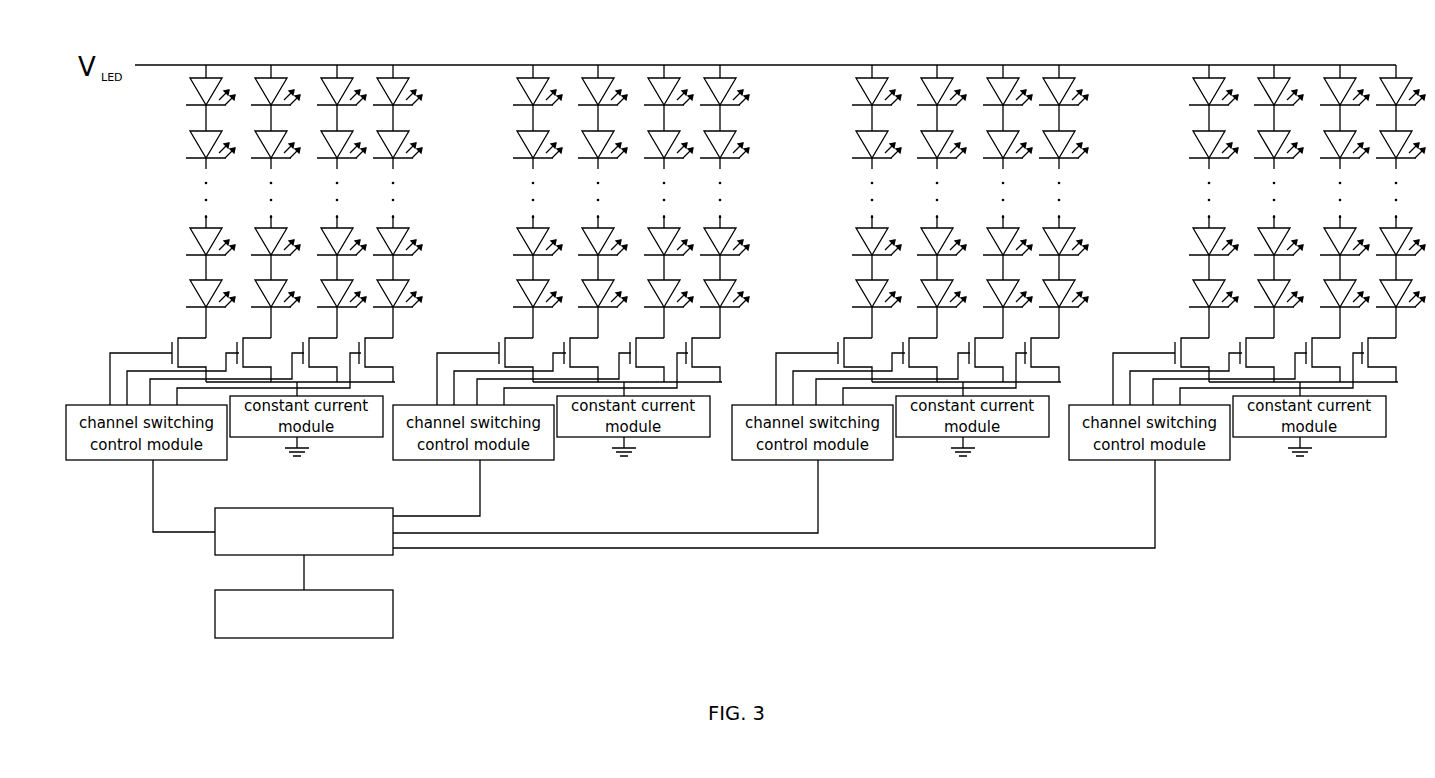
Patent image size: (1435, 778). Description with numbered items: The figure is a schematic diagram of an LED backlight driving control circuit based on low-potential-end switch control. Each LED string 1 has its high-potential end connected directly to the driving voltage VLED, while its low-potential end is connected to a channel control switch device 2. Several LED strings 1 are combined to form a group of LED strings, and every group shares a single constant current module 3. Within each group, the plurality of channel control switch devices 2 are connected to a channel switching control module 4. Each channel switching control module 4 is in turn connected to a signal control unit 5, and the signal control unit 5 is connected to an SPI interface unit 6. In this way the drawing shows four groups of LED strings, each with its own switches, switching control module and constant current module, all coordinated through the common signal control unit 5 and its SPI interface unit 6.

The LED string 1 is at (185, 147).
The channel control switch device 2 is at (188, 337).
The constant current module 3 is at (262, 440).
The channel switching control module 4 is at (88, 403).
The signal control unit 5 is at (225, 543).
The SPI interface unit 6 is at (230, 625).